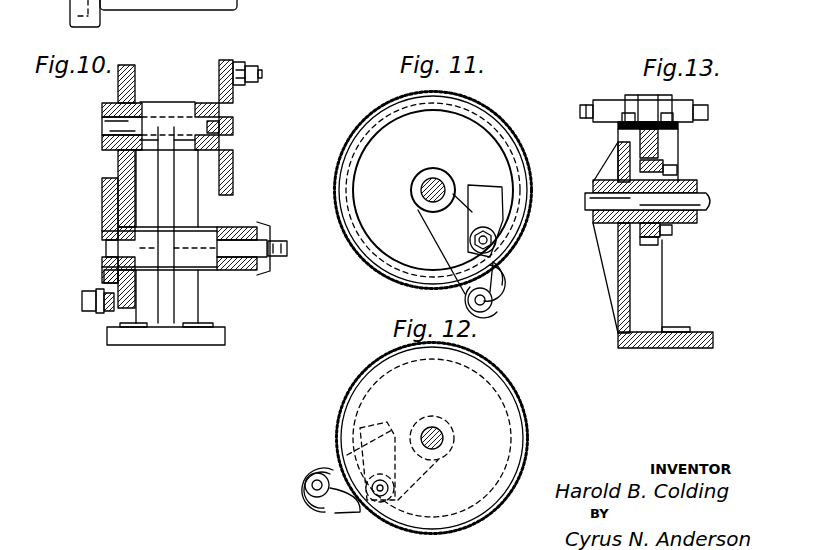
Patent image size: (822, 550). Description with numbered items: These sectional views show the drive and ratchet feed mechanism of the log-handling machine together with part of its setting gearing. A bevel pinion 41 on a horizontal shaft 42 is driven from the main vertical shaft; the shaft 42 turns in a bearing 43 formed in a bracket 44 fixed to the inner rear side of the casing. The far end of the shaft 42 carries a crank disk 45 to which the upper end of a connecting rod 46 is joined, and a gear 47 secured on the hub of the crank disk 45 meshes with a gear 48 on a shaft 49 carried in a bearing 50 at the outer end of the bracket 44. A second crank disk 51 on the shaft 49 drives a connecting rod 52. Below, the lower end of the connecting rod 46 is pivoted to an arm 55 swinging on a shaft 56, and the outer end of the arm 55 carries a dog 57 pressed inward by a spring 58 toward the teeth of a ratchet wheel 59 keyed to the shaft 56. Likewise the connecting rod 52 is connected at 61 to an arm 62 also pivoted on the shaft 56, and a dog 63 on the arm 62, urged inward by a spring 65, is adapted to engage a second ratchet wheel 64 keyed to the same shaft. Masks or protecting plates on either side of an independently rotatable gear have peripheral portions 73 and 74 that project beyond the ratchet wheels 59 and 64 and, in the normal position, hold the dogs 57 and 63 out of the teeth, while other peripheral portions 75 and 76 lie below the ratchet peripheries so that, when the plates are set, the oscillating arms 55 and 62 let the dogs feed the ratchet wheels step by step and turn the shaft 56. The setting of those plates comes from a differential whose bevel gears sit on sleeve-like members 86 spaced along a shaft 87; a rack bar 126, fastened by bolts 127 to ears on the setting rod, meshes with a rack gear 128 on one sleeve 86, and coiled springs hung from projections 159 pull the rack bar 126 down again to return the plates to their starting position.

In FIG. 10, the bevel pinion 41 is at (265, 225).
In FIG. 10, the horizontal shaft 42 is at (285, 250).
In FIG. 10, the bearing 43 is at (212, 228).
In FIG. 10, the bracket 44 is at (202, 297).
In FIG. 10, the crank disk 45 is at (103, 203).
In FIG. 10, the connecting rod 46 is at (95, 312).
In FIG. 12, the connecting rod 46 is at (380, 428).
In FIG. 10, the gear 47 is at (144, 285).
In FIG. 10, the gear 48 is at (118, 160).
In FIG. 10, the shaft 49 is at (101, 121).
In FIG. 10, the bearing 50 is at (172, 102).
In FIG. 10, the crank disk 51 is at (233, 178).
In FIG. 10, the connecting rod 52 is at (242, 60).
In FIG. 11, the connecting rod 52 is at (487, 187).
In FIG. 11, the shaft 56 is at (432, 178).
In FIG. 12, the shaft 56 is at (432, 432).
In FIG. 11, the connection 61 is at (498, 238).
In FIG. 11, the arm 62 is at (430, 232).
In FIG. 11, the dog 63 is at (512, 292).
In FIG. 11, the spring 65 is at (500, 312).
In FIG. 11, the ratchet wheel 64 is at (370, 259).
In FIG. 11, the projecting periphery portion 74 is at (475, 103).
In FIG. 11, the recessed periphery portion 76 is at (343, 173).
In FIG. 12, the projecting periphery portion 73 is at (352, 380).
In FIG. 12, the recessed periphery portion 75 is at (500, 375).
In FIG. 12, the ratchet wheel 59 is at (521, 407).
In FIG. 12, the arm 55 is at (332, 467).
In FIG. 12, the dog 57 is at (348, 522).
In FIG. 12, the spring 58 is at (318, 510).
In FIG. 13, the rack bar 126 is at (662, 147).
In FIG. 13, the bolts 127 is at (633, 93).
In FIG. 13, the rack gear 128 is at (649, 247).
In FIG. 13, the projections 159 is at (598, 115).
In FIG. 13, the sleeve-like members 86 is at (695, 182).
In FIG. 13, the shaft 87 is at (717, 205).